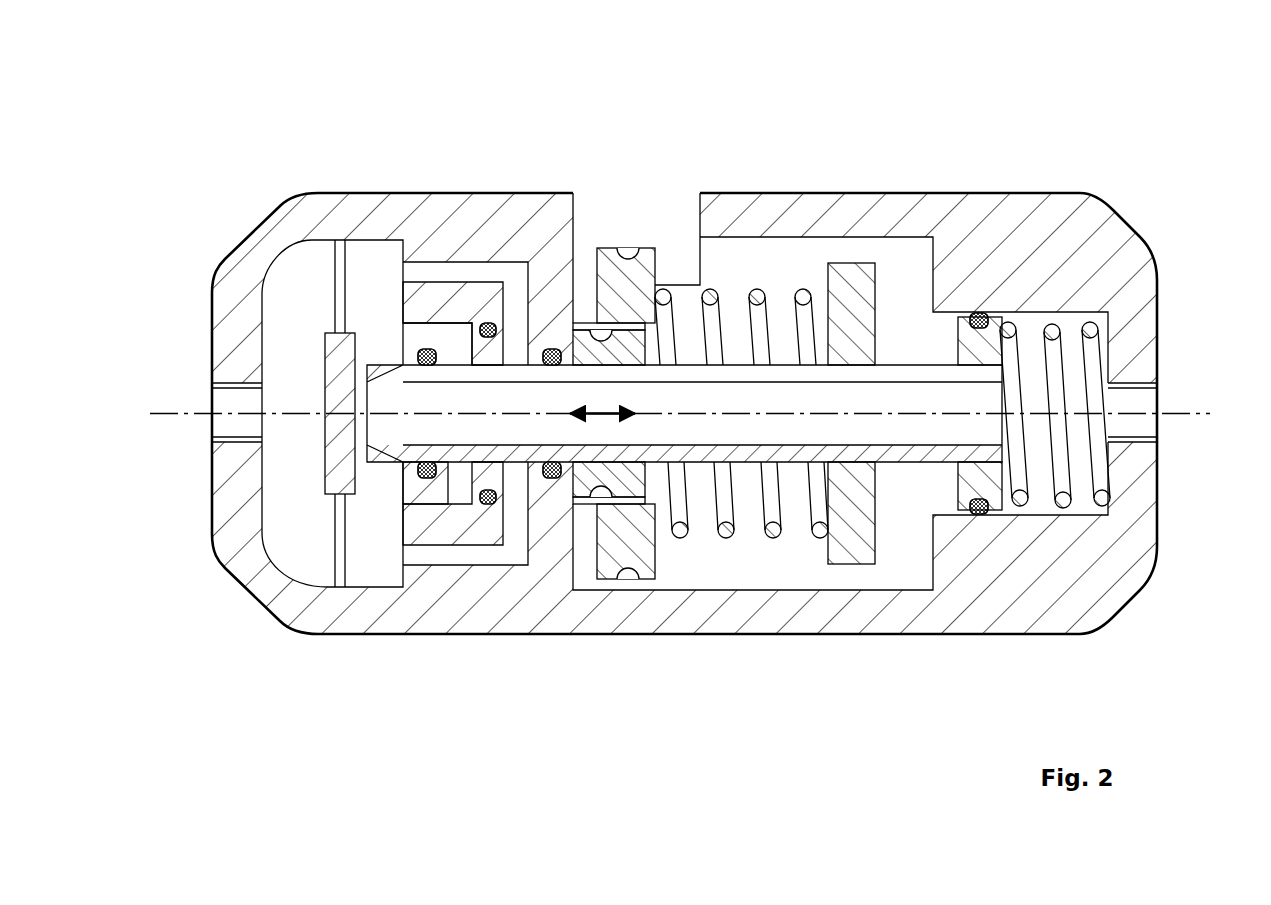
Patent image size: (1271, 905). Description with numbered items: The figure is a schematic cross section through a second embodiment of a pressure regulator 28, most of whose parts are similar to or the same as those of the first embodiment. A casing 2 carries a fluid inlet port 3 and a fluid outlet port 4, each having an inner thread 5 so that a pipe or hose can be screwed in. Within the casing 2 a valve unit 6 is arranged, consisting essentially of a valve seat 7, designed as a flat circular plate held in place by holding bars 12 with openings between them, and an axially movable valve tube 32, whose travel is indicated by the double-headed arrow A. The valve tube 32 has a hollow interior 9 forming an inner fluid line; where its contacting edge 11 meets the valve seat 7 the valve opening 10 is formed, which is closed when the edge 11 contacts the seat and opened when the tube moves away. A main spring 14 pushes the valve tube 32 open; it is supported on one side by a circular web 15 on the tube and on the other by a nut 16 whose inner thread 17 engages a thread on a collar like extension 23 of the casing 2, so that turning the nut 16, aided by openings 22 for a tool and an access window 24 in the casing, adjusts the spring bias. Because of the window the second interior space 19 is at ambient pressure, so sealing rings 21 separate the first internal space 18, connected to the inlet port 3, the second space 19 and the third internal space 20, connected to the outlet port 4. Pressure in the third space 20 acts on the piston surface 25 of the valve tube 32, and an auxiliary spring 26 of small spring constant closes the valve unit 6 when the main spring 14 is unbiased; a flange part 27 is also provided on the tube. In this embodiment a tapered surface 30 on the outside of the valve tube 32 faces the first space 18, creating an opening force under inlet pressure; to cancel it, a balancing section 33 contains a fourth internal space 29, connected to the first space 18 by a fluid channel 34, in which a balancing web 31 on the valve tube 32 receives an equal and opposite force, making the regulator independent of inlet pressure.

The casing 2 is at (1056, 190).
The fluid inlet port 3 is at (215, 403).
The fluid outlet port 4 is at (1160, 400).
The inner thread 5 is at (232, 432).
The valve unit 6 is at (262, 300).
The valve seat 7 is at (314, 360).
The hollow interior 9 is at (906, 407).
The valve opening 10 is at (366, 354).
The contacting edge 11 is at (362, 455).
The holding bars 12 is at (337, 285).
The main spring 14 is at (681, 538).
The circular web 15 is at (847, 265).
The nut 16 is at (649, 245).
The inner thread 17 is at (585, 330).
The first internal space 18 is at (284, 527).
The second interior space 19 is at (732, 572).
The third internal space 20 is at (1017, 377).
The sealing rings 21 is at (427, 348).
The openings 22 is at (620, 255).
The collar like extension 23 is at (600, 560).
The access window 24 is at (632, 220).
The piston surface 25 is at (1010, 482).
The auxiliary spring 26 is at (1062, 505).
The flange part 27 is at (962, 320).
The pressure regulator 28 is at (1140, 190).
The fourth internal space 29 is at (515, 540).
The tapered surface 30 is at (400, 468).
The balancing web 31 is at (498, 290).
The valve tube 32 is at (905, 470).
The balancing section 33 is at (470, 642).
The fluid channel 34 is at (440, 550).
The axial direction A is at (605, 420).